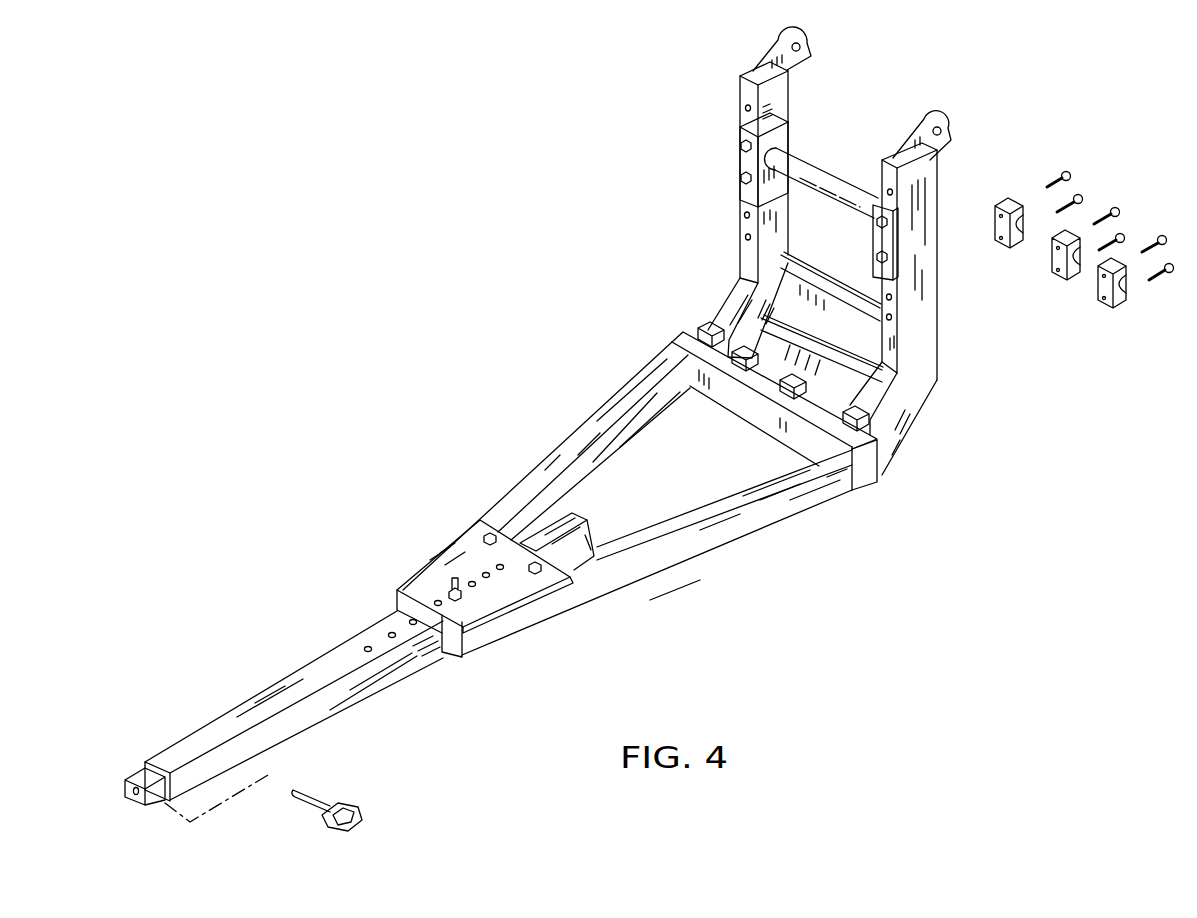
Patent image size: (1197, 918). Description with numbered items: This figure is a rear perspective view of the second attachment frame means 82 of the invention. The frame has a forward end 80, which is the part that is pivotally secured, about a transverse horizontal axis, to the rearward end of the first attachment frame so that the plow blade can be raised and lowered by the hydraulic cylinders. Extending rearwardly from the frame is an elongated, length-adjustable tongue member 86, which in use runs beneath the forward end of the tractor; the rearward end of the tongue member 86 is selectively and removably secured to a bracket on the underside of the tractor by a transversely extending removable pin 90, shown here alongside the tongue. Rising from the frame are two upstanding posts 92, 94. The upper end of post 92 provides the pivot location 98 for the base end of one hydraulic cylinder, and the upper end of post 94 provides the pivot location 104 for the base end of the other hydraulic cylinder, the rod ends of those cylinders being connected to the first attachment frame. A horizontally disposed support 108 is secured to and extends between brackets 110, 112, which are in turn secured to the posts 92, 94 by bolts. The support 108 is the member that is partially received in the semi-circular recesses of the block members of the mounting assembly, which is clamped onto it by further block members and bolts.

The forward end 80 is at (806, 389).
The second attachment frame means 82 is at (488, 480).
The tongue member 86 is at (313, 680).
The removable pin 90 is at (318, 800).
The post 92 is at (725, 226).
The post 94 is at (935, 186).
The pivot connection 98 is at (782, 36).
The pivot connection 104 is at (937, 125).
The support 108 is at (812, 160).
The bracket 110 is at (746, 160).
The bracket 112 is at (886, 244).